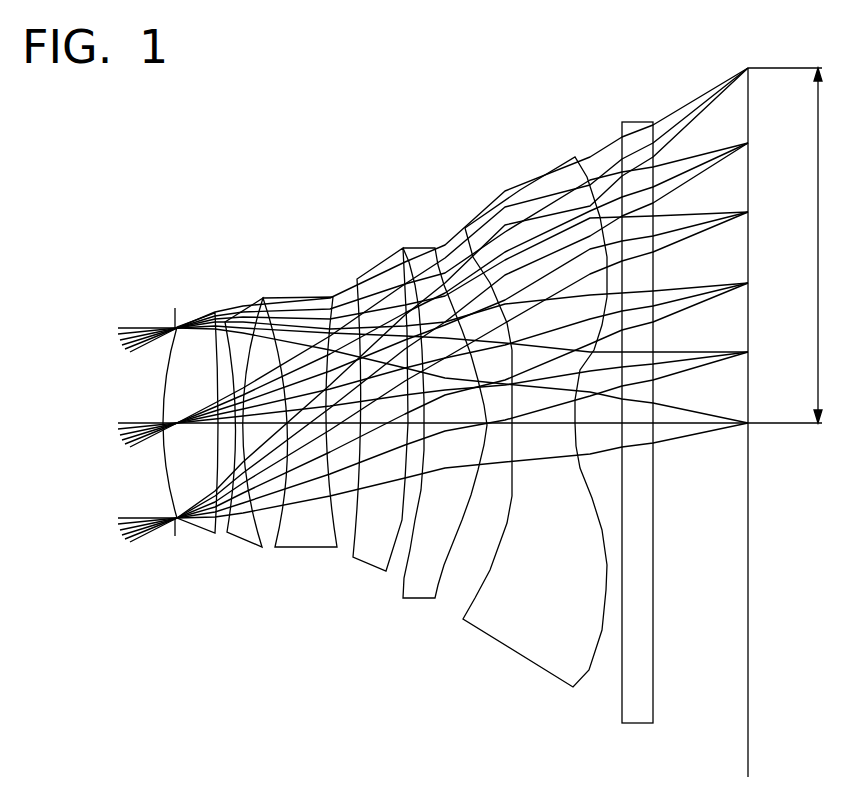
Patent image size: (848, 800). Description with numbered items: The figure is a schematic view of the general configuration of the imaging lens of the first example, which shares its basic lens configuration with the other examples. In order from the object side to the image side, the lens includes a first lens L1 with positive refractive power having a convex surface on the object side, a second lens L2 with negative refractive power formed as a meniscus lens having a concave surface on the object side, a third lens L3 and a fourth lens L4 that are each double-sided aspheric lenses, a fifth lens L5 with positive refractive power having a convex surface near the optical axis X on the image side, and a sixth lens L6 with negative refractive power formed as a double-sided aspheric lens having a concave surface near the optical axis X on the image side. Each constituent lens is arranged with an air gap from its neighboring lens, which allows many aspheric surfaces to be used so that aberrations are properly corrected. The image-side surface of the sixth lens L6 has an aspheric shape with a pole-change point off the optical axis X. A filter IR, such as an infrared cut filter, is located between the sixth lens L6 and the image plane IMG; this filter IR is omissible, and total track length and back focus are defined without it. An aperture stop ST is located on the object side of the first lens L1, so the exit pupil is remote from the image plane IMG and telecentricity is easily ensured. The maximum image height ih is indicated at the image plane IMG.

The aperture stop ST is at (175, 313).
The optical axis X is at (125, 422).
The first lens L1 is at (200, 318).
The second lens L2 is at (243, 300).
The third lens L3 is at (317, 298).
The fourth lens L4 is at (362, 276).
The fifth lens L5 is at (422, 247).
The sixth lens L6 is at (527, 185).
The filter IR is at (620, 125).
The image plane IMG is at (748, 742).
The maximum image height ih is at (785, 245).